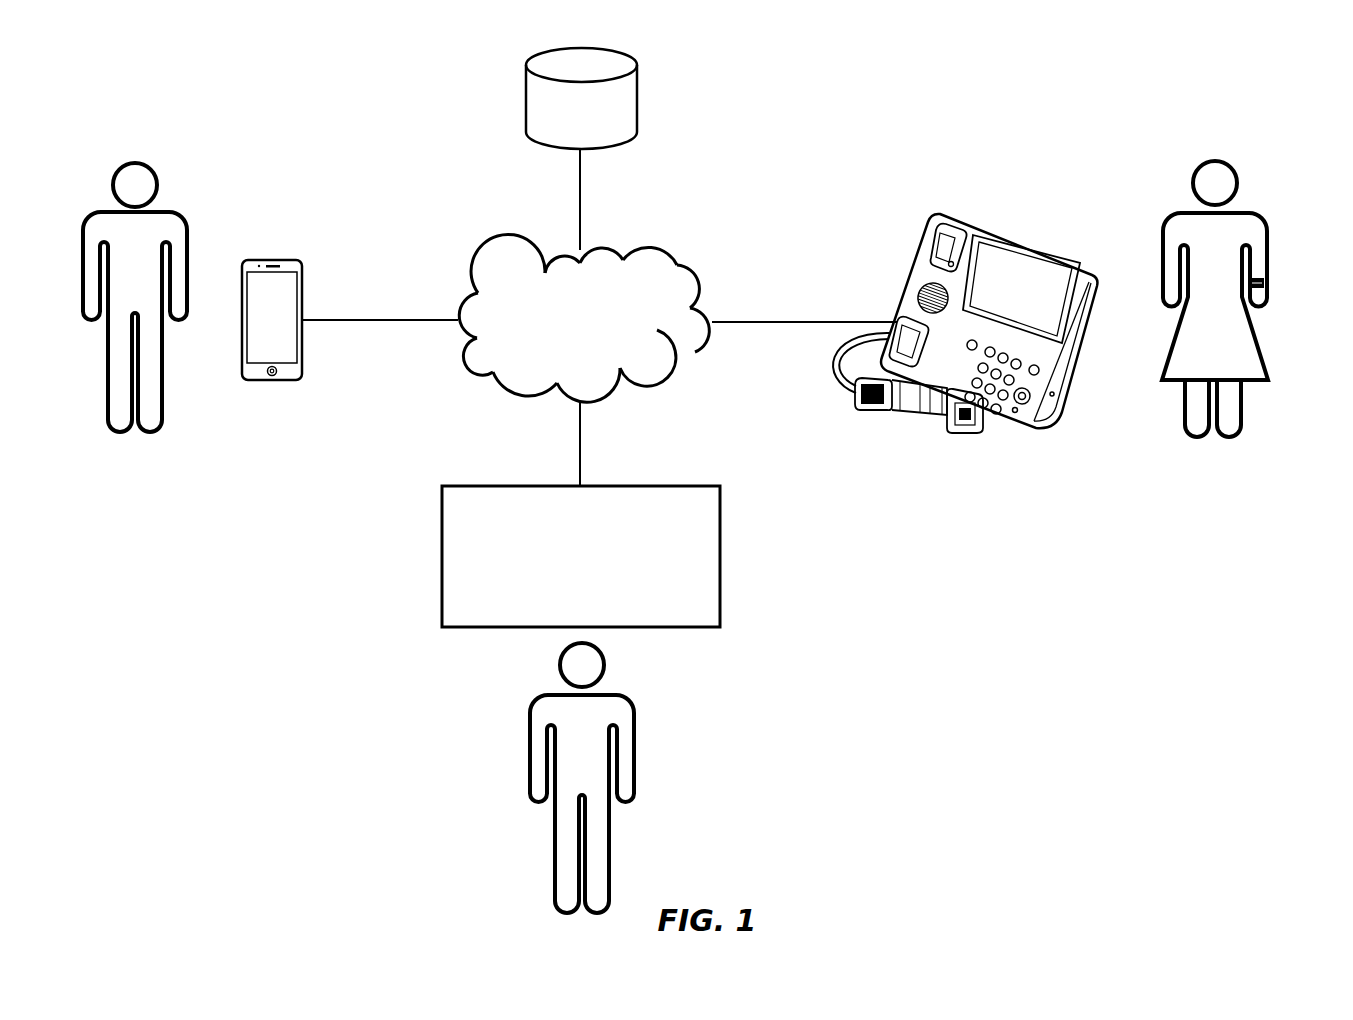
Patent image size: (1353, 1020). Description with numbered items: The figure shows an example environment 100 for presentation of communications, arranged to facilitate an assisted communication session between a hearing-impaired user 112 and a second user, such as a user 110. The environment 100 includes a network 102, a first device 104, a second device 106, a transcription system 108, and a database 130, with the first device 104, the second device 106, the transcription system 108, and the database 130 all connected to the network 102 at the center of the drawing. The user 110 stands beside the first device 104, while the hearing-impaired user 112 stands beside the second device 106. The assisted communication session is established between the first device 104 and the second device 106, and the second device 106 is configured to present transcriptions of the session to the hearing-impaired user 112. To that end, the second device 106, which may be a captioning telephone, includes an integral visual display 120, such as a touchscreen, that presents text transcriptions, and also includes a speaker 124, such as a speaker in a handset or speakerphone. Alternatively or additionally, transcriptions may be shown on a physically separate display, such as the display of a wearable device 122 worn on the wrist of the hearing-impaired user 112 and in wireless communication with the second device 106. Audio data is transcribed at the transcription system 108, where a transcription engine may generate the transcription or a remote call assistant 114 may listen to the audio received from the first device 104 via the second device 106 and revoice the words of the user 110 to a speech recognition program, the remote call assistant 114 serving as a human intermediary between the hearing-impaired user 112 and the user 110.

The environment 100 is at (1084, 54).
The network 102 is at (562, 348).
The first device 104 is at (267, 258).
The second device 106 is at (964, 326).
The transcription system 108 is at (562, 583).
The user 110 is at (155, 169).
The hearing-impaired user 112 is at (1233, 172).
The remote call assistant 114 is at (530, 757).
The visual display 120 is at (1010, 262).
The wearable device 122 is at (1264, 283).
The speaker 124 is at (962, 433).
The database 130 is at (565, 135).